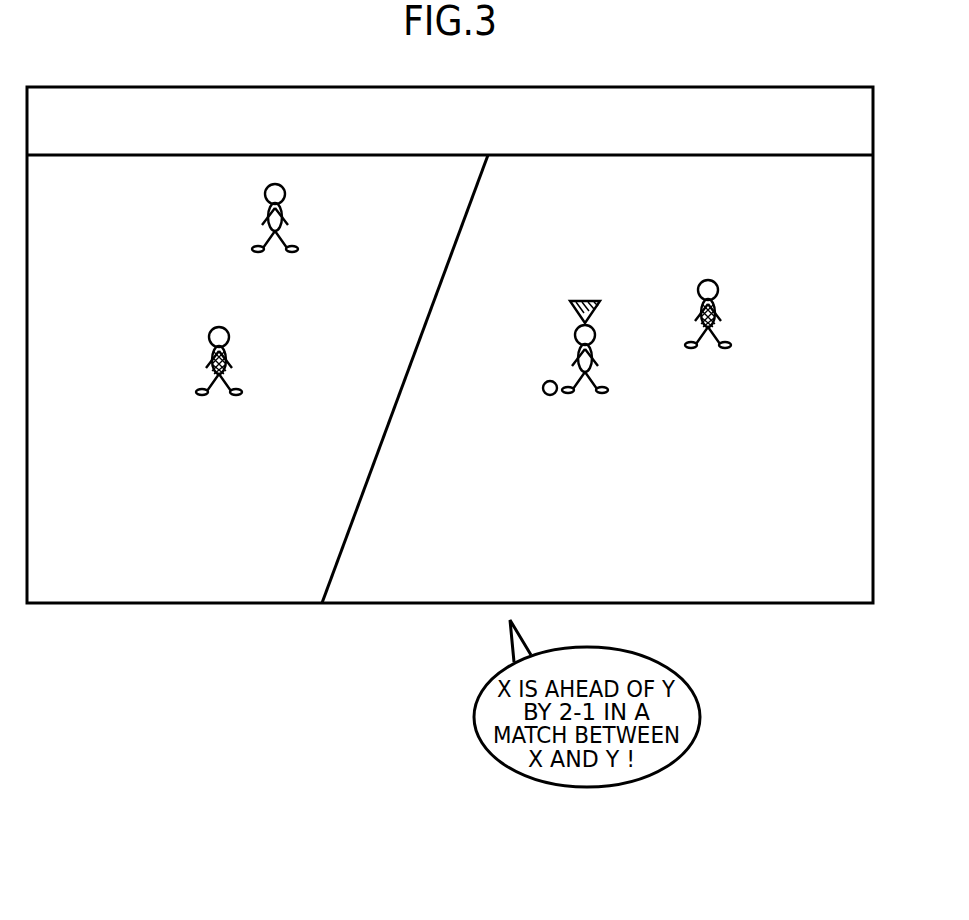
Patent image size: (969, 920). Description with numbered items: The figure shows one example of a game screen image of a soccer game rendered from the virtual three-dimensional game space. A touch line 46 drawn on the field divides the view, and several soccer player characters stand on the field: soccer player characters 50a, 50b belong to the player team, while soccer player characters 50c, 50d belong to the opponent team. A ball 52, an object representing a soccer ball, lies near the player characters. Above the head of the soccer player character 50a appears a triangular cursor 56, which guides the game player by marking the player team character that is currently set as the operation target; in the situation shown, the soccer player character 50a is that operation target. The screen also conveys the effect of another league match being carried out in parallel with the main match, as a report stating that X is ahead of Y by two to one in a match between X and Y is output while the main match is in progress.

The touch line 46 is at (663, 156).
The soccer player character 50a is at (572, 337).
The soccer player character 50b is at (287, 191).
The soccer player character 50c is at (221, 326).
The soccer player character 50d is at (720, 290).
The ball 52 is at (552, 396).
The cursor 56 is at (600, 304).